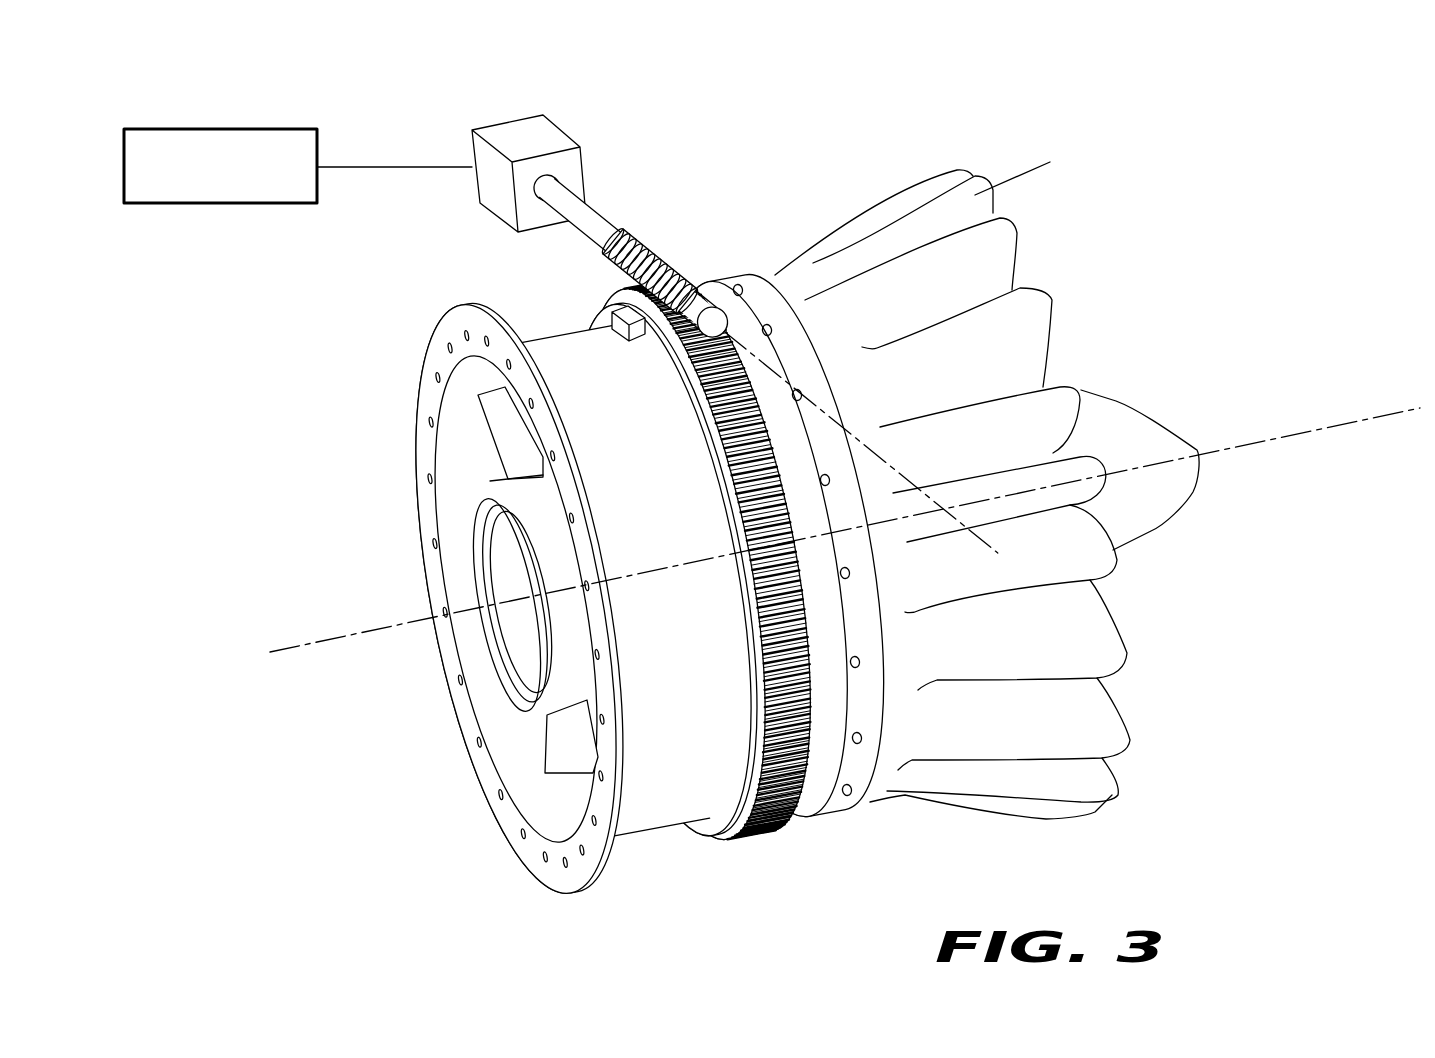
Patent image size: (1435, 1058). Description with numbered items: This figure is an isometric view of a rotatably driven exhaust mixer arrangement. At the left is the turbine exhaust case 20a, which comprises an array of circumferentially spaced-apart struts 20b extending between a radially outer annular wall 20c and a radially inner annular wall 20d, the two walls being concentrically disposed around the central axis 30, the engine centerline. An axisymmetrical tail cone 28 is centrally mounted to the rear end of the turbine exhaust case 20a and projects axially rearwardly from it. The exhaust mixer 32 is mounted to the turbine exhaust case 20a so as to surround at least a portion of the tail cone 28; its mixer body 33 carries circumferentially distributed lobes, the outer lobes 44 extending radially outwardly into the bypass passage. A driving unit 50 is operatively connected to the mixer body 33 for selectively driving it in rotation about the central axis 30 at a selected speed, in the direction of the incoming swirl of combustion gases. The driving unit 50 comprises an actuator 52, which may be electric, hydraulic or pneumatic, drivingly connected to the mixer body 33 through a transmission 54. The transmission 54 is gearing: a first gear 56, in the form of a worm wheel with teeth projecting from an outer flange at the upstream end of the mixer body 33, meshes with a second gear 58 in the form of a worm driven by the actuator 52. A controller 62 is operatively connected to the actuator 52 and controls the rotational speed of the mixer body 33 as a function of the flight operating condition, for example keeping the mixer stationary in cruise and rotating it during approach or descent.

The turbine exhaust case 20a is at (471, 625).
The struts 20b is at (570, 738).
The radially outer annular wall 20c is at (553, 348).
The radially inner annular wall 20d is at (530, 493).
The tail cone 28 is at (1165, 443).
The central axis 30 is at (1330, 408).
The exhaust mixer 32 is at (987, 434).
The mixer body 33 is at (987, 434).
The outer lobes 44 is at (987, 434).
The driving unit 50 is at (740, 312).
The actuator 52 is at (516, 138).
The transmission 54 is at (676, 242).
The first gear 56 is at (775, 835).
The second gear 58 is at (690, 278).
The controller 62 is at (218, 128).